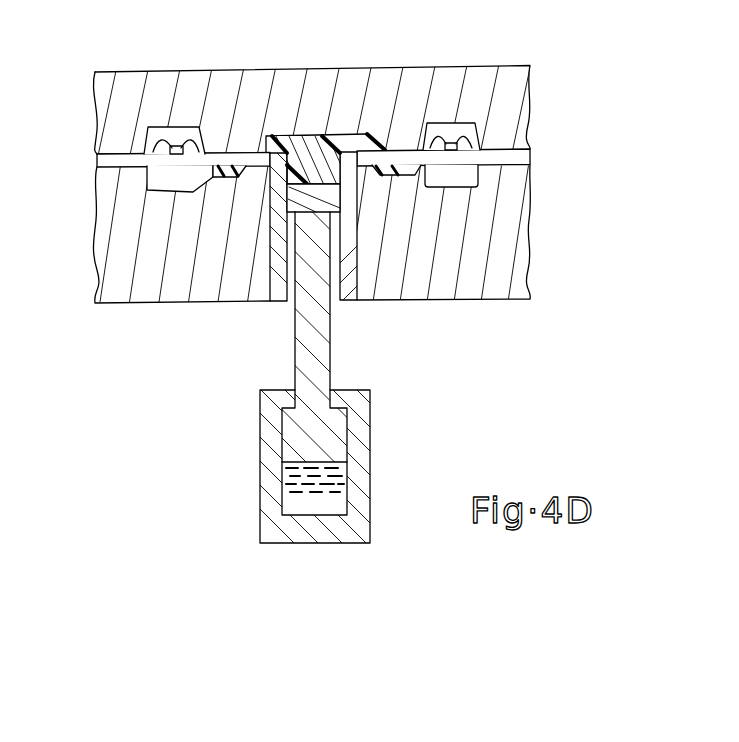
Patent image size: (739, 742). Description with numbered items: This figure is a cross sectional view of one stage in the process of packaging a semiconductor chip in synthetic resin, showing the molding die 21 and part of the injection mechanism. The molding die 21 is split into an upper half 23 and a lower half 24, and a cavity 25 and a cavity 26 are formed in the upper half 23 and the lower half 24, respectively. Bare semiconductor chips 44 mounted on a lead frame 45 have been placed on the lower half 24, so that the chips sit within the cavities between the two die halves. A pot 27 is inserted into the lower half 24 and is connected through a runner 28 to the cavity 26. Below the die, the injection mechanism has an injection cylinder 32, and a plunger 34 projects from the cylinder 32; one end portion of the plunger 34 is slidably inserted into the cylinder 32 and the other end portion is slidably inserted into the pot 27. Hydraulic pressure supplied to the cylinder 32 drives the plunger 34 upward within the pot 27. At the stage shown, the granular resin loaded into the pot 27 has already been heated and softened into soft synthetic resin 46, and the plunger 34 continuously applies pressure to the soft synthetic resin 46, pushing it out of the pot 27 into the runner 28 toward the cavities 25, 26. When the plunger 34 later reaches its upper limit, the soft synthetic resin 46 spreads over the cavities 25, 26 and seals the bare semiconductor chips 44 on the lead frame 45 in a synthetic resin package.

The molding die 21 is at (604, 132).
The upper half 23 is at (531, 118).
The lower half 24 is at (528, 212).
The cavity 25 is at (177, 147).
The cavity 26 is at (167, 178).
The pot 27 is at (278, 305).
The runner 28 is at (227, 172).
The injection cylinder 32 is at (372, 497).
The plunger 34 is at (320, 343).
The bare semiconductor chip 44 is at (177, 148).
The lead frame 45 is at (97, 160).
The soft synthetic resin 46 is at (306, 136).